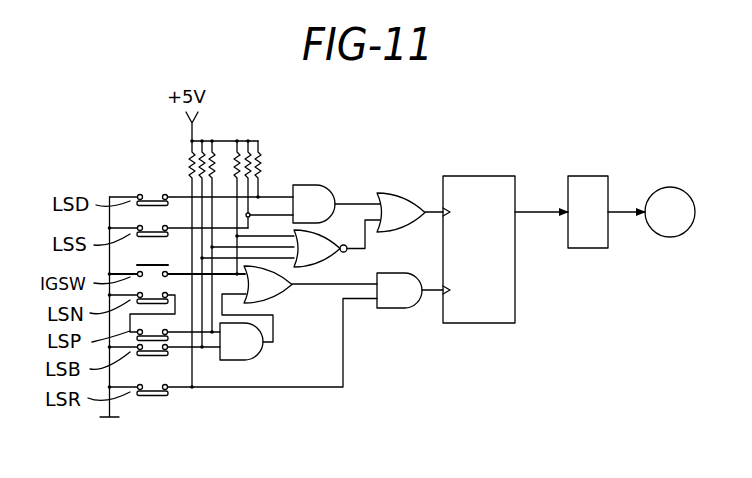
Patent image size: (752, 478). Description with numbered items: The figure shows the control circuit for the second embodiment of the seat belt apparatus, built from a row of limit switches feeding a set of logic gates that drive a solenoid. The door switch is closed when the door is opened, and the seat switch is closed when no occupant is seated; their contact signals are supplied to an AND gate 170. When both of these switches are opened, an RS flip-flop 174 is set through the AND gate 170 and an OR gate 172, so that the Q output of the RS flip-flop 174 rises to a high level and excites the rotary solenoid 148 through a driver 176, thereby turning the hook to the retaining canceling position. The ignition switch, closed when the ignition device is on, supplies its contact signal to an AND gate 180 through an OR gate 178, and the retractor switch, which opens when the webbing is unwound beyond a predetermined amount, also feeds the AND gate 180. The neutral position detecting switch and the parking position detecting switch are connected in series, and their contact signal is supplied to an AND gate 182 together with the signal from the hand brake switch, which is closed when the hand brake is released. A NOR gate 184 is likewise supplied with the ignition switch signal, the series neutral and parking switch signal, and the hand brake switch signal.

The rotary solenoid 148 is at (665, 188).
The AND gate 170 is at (310, 185).
The OR gate 172 is at (394, 188).
The RS flip-flop 174 is at (480, 176).
The driver 176 is at (588, 176).
The OR gate 178 is at (282, 298).
The AND gate 180 is at (393, 273).
The AND gate 182 is at (252, 362).
The NOR gate 184 is at (331, 222).